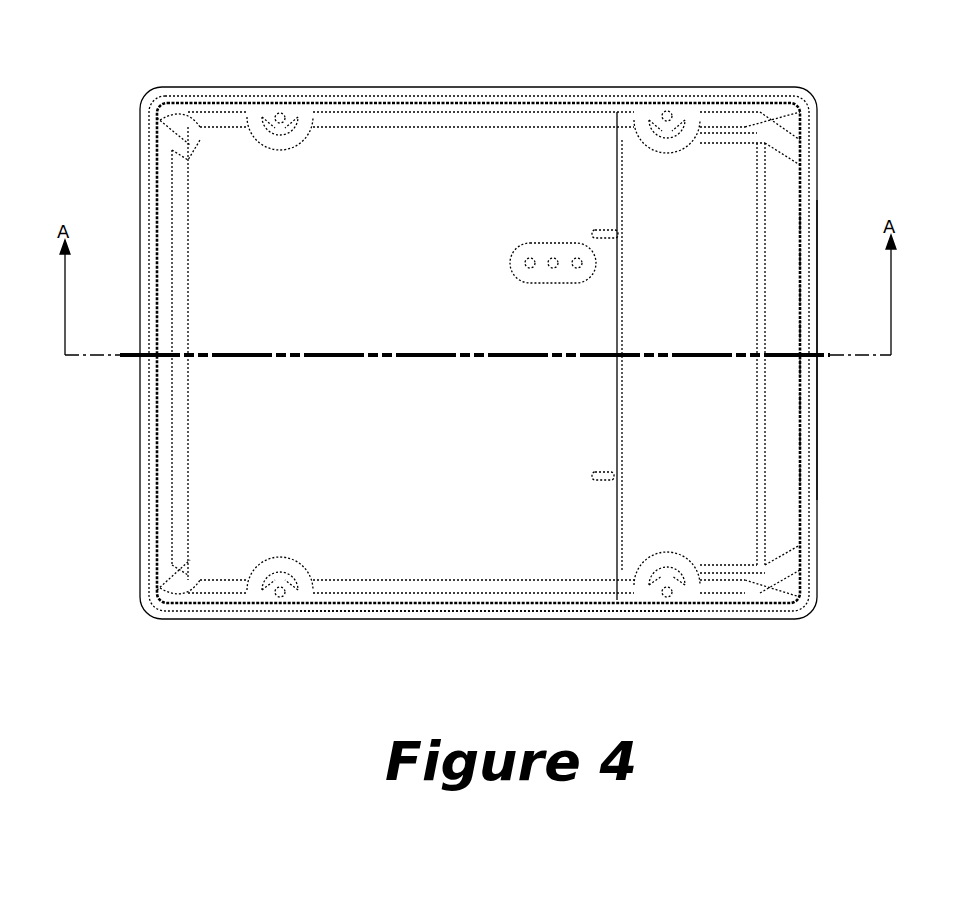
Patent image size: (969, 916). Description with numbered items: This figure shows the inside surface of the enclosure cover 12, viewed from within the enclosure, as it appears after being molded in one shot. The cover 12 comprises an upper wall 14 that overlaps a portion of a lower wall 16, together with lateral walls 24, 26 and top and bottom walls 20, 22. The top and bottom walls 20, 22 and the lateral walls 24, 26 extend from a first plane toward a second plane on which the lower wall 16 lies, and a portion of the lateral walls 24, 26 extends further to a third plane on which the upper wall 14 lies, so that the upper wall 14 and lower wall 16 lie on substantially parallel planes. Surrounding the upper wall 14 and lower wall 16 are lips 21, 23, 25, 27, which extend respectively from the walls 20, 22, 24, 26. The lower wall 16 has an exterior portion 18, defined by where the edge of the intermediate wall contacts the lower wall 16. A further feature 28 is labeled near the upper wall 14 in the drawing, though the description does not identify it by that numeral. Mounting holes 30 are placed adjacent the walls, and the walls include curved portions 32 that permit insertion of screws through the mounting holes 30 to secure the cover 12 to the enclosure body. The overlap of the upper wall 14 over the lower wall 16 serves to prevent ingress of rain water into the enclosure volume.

The cover 12 is at (97, 88).
The upper wall 14 is at (728, 540).
The lower wall 16 is at (400, 558).
The exterior portion 18 is at (612, 502).
The top wall 20 is at (781, 428).
The lip 21 is at (810, 385).
The bottom wall 22 is at (535, 592).
The lip 23 is at (586, 612).
The lateral wall 24 is at (160, 420).
The lip 25 is at (142, 462).
The lateral wall 26 is at (735, 115).
The lip 27 is at (680, 87).
The inner step 28 is at (630, 140).
The mounting holes 30 is at (666, 596).
The curved portions 32 is at (672, 566).